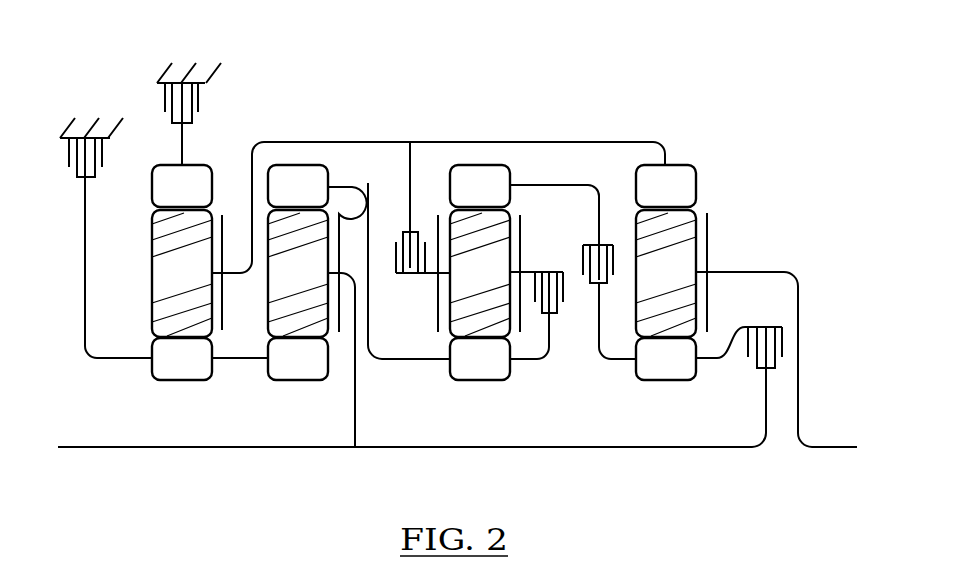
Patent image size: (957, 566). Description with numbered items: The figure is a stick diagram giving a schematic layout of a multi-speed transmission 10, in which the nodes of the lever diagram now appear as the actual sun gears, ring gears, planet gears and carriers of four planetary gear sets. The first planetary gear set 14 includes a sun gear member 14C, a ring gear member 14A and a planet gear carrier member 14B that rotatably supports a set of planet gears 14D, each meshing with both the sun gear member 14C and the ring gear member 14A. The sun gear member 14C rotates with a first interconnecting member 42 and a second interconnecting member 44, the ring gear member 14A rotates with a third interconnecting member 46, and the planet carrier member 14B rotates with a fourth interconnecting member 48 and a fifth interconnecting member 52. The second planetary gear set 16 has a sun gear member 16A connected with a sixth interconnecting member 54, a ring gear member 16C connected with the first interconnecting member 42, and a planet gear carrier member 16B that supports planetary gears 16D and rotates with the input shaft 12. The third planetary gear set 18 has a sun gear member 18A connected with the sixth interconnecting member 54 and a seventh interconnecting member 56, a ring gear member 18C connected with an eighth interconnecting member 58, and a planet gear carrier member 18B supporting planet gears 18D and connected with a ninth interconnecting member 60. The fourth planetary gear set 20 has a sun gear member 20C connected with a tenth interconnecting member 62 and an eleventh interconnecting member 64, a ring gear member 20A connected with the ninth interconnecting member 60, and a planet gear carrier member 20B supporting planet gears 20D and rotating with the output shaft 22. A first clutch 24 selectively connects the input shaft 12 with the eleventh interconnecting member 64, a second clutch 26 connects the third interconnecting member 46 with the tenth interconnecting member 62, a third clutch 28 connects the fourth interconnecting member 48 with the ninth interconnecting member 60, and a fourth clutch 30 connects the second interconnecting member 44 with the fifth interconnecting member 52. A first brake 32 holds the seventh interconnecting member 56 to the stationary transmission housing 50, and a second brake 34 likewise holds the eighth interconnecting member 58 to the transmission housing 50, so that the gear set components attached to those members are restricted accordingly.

The multi-speed transmission 10 is at (748, 104).
The input shaft or member 12 is at (107, 448).
The first planetary gear set 14 is at (481, 325).
The ring gear member 14A is at (499, 198).
The planet gear carrier member 14B is at (528, 222).
The sun gear member 14C is at (499, 372).
The planet gears 14D is at (499, 282).
The second planetary gear set 16 is at (330, 324).
The sun gear member 16A is at (317, 372).
The planet gear carrier member 16B is at (369, 190).
The ring gear member 16C is at (317, 198).
The planetary gears 16D is at (317, 282).
The third planetary gear set 18 is at (208, 332).
The sun gear member 18A is at (201, 372).
The planet gear carrier member 18B is at (225, 315).
The ring gear member 18C is at (201, 198).
The planet gears 18D is at (201, 282).
The fourth planetary gear set 20 is at (706, 332).
The ring gear member 20A is at (685, 198).
The planet gear carrier member 20B is at (708, 240).
The sun gear member 20C is at (685, 372).
The planet gears 20D is at (685, 282).
The output shaft or member 22 is at (832, 448).
The first clutch 24 is at (783, 343).
The second clutch 26 is at (600, 243).
The third clutch 28 is at (424, 247).
The fourth clutch 30 is at (565, 295).
The first brake 32 is at (103, 160).
The second brake 34 is at (197, 106).
The first shaft or interconnecting member 42 is at (430, 362).
The second shaft or interconnecting member 44 is at (530, 362).
The third shaft or interconnecting member 46 is at (527, 183).
The fourth shaft or interconnecting member 48 is at (432, 278).
The stationary element or transmission housing 50 is at (185, 80).
The fifth shaft or interconnecting member 52 is at (525, 265).
The sixth shaft or interconnecting member 54 is at (228, 362).
The seventh shaft or interconnecting member 56 is at (83, 322).
The eighth shaft or interconnecting member 58 is at (183, 147).
The ninth shaft or interconnecting member 60 is at (338, 140).
The tenth shaft or interconnecting member 62 is at (617, 362).
The eleventh shaft or interconnecting member 64 is at (708, 362).